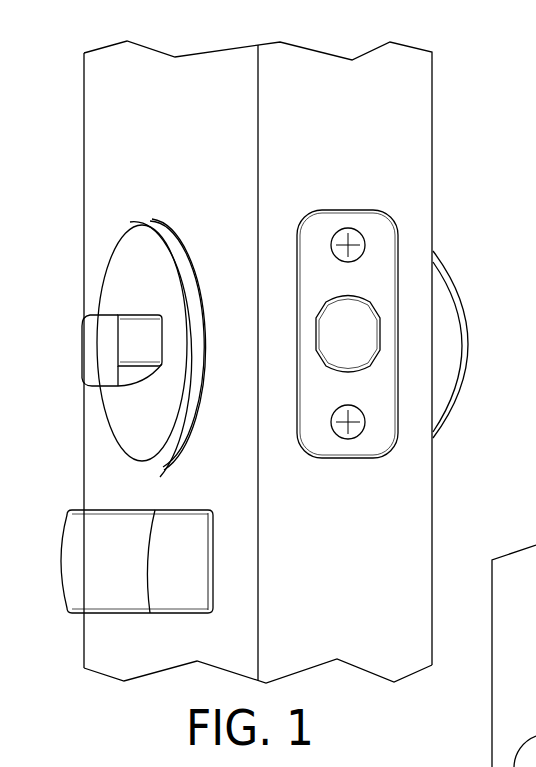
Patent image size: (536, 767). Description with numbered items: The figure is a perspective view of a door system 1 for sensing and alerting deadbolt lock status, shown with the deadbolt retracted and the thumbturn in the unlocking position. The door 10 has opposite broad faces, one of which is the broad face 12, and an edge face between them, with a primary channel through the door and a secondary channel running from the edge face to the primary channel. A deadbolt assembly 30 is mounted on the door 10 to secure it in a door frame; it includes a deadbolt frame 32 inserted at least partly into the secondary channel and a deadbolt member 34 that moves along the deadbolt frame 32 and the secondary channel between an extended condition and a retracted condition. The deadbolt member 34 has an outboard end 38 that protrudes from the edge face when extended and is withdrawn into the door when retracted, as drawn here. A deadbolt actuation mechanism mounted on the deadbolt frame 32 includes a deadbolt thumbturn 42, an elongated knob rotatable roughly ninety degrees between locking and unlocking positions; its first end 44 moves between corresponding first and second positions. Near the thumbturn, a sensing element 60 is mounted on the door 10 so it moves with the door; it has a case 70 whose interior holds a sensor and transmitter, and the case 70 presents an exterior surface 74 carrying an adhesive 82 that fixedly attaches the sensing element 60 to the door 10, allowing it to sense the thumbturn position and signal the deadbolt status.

The door system 1 is at (428, 41).
The door 10 is at (318, 83).
The broad face 12 is at (193, 98).
The deadbolt assembly 30 is at (420, 229).
The deadbolt frame 32 is at (377, 363).
The deadbolt member 34 is at (360, 312).
The outboard end 38 is at (360, 331).
The deadbolt thumbturn 42 is at (78, 393).
The first end 44 is at (140, 328).
The sensing element 60 is at (98, 627).
The case 70 is at (187, 606).
The exterior surface 74 is at (206, 583).
The adhesive 82 is at (212, 542).